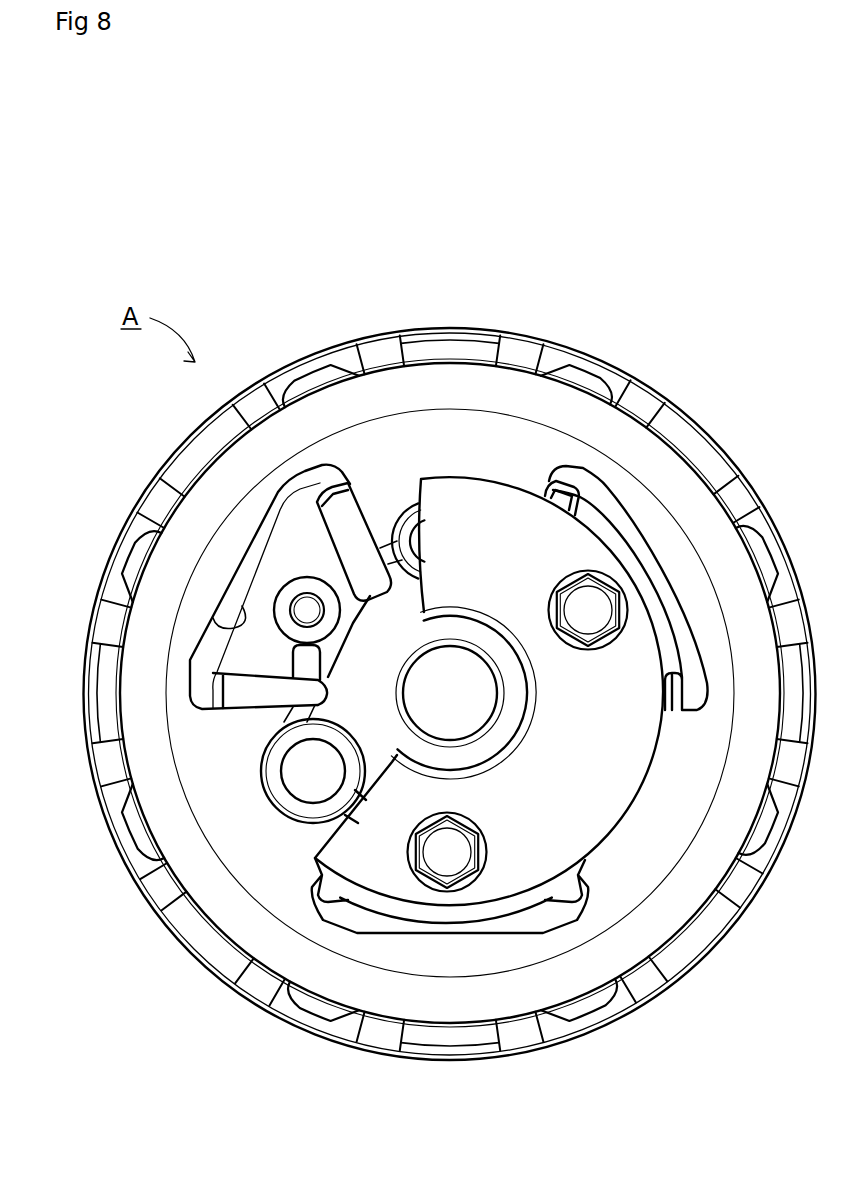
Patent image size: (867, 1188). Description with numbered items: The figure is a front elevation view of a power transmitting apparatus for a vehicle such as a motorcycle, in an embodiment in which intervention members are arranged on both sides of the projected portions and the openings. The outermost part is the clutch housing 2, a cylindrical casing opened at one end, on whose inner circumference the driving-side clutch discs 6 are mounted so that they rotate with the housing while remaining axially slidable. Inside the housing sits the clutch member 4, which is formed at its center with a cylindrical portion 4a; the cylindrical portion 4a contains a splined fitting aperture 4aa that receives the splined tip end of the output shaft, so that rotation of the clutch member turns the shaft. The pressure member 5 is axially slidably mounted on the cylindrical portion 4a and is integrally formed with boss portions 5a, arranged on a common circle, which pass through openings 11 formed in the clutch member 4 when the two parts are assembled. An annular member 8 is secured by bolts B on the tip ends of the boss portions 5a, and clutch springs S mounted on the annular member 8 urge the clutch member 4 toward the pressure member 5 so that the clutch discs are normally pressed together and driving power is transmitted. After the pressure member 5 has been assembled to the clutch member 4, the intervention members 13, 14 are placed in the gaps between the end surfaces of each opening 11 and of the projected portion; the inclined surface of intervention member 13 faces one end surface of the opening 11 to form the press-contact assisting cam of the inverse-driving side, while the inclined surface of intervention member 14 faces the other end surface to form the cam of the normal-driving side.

The clutch housing 2 is at (565, 355).
The clutch member 4 is at (228, 460).
The cylindrical portion 4a is at (500, 738).
The splined fitting aperture 4aa is at (478, 700).
The pressure member 5 is at (285, 555).
The boss portion 5a is at (337, 617).
The driving-side clutch disc 6 is at (475, 340).
The annular member 8 is at (490, 497).
The opening 11 is at (237, 613).
The intervention member 13 is at (360, 522).
The intervention member 14 is at (232, 685).
The clutch spring S is at (275, 770).
The bolt B is at (560, 590).